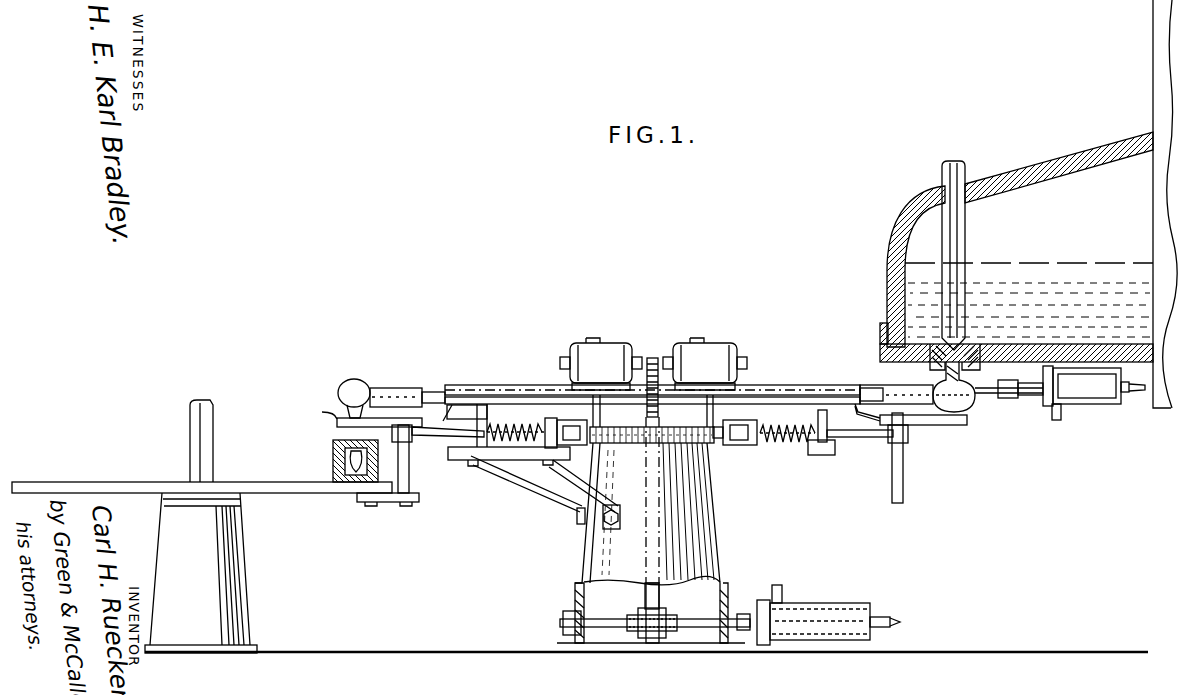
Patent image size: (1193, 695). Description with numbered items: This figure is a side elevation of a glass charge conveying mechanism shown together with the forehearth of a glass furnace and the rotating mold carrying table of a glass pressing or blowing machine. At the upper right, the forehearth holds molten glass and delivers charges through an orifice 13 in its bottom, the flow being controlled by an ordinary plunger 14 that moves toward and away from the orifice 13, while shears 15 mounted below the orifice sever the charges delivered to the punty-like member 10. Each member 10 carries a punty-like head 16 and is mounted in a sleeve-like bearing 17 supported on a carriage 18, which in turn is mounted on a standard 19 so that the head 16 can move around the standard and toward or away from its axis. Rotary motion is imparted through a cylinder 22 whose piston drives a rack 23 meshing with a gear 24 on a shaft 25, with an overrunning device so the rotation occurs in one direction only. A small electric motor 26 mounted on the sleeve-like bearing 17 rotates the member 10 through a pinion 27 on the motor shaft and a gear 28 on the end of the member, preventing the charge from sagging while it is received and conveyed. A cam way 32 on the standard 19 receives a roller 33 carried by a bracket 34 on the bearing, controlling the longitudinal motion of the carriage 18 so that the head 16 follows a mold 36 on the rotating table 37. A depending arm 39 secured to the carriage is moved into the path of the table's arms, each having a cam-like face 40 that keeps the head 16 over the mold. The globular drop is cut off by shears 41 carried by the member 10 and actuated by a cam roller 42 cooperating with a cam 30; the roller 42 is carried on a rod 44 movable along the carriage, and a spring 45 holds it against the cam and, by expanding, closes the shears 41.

The punty-like member 10 is at (405, 388).
The orifice 13 is at (962, 346).
The plunger 14 is at (940, 181).
The shears 15 is at (975, 390).
The punty-like head 16 is at (357, 379).
The sleeve-like bearing 17 is at (455, 385).
The carriage 18 is at (733, 406).
The standard 19 is at (722, 509).
The cylinder 22 is at (848, 600).
The rack 23 is at (700, 629).
The gear 24 is at (632, 616).
The shaft 25 is at (658, 595).
The electric motor 26 is at (598, 350).
The pinion 27 is at (652, 358).
The gear 28 is at (652, 420).
The cam 30 is at (678, 432).
The cam way 32 is at (527, 453).
The roller 33 is at (465, 470).
The bracket 34 is at (468, 418).
The mold 36 is at (333, 460).
The rotating table 37 is at (285, 494).
The depending arm 39 is at (410, 476).
The cam-like face 40 is at (385, 503).
The shears 41 is at (322, 412).
The cam roller 42 is at (575, 465).
The rod 44 is at (445, 437).
The spring 45 is at (508, 440).